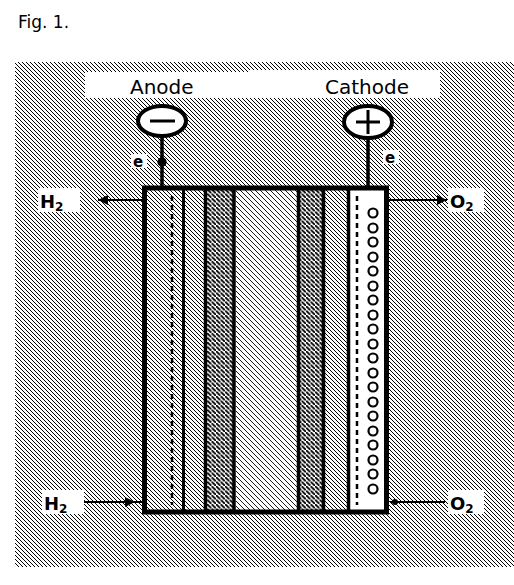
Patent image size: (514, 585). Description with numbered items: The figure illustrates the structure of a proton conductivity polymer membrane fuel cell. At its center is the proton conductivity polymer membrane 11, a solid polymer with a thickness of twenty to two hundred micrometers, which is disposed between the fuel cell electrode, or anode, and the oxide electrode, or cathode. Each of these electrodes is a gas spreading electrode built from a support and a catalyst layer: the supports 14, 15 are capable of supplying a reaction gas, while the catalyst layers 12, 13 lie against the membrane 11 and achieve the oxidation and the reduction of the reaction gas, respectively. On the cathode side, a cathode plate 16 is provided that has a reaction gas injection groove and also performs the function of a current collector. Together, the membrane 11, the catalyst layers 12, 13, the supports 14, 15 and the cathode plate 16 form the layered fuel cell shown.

The proton conductivity polymer membrane 11 is at (262, 500).
The catalyst layer 12 is at (220, 500).
The catalyst layer 13 is at (312, 500).
The support 14 is at (185, 293).
The support 15 is at (156, 352).
The cathode plate 16 is at (386, 352).